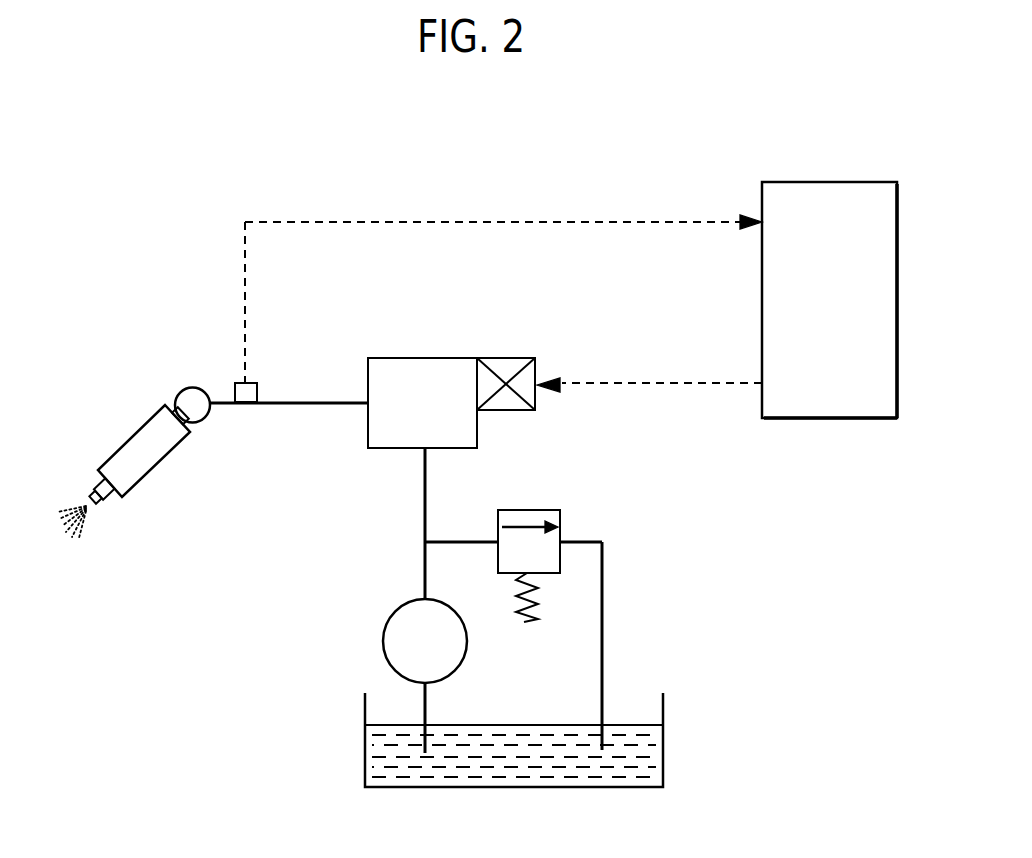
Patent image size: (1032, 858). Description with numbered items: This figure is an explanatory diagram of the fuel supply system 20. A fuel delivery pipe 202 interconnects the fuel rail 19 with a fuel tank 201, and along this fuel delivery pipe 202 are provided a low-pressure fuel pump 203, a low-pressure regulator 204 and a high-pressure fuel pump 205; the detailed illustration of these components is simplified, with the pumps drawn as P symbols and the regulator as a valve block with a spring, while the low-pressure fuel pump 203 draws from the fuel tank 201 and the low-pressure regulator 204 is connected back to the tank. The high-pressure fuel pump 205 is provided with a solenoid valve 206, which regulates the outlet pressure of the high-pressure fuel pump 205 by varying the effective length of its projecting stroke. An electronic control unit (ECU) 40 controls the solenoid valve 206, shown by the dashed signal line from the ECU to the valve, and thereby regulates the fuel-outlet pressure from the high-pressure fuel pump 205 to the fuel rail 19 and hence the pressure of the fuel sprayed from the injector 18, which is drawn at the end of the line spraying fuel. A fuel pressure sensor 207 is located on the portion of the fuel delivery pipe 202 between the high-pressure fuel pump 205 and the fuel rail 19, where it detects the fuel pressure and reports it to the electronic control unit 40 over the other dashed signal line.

The injector 18 is at (128, 435).
The fuel rail 19 is at (192, 388).
The fuel supply system 20 is at (376, 488).
The electronic control unit (ECU) 40 is at (820, 182).
The fuel tank 201 is at (663, 757).
The fuel delivery pipe 202 is at (293, 406).
The low-pressure fuel pump 203 is at (400, 610).
The low-pressure regulator 204 is at (527, 510).
The high-pressure fuel pump 205 is at (418, 357).
The solenoid valve 206 is at (508, 357).
The fuel pressure sensor 207 is at (247, 382).